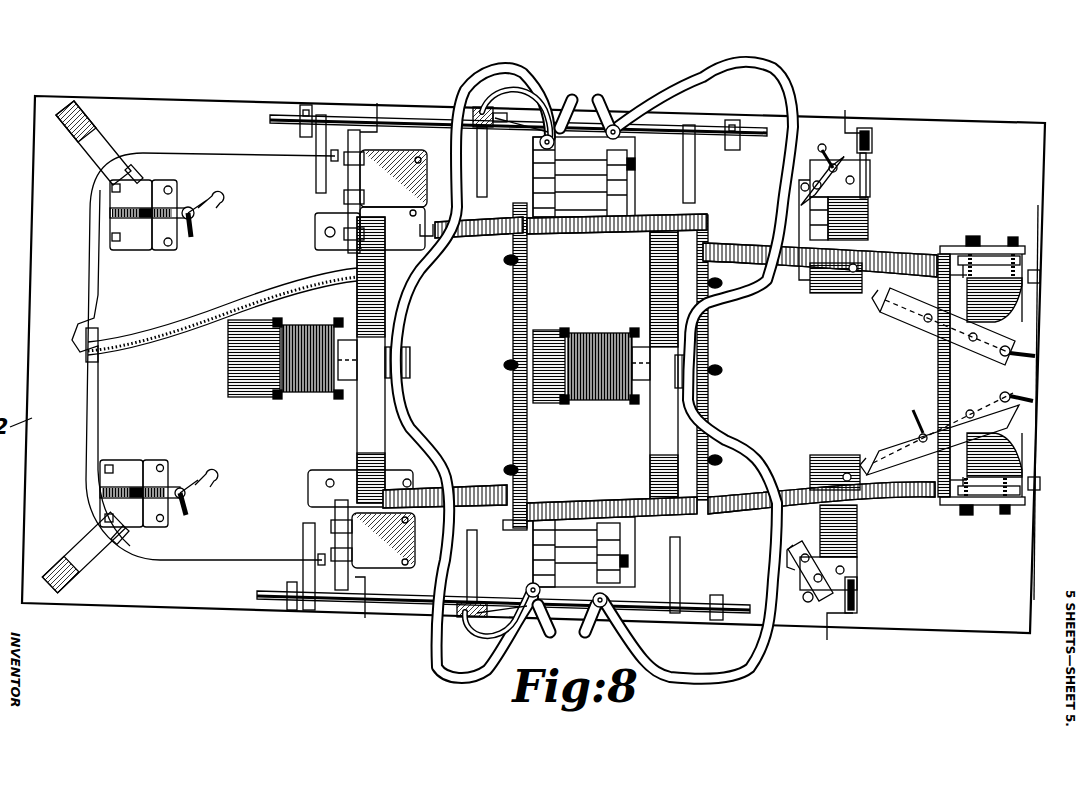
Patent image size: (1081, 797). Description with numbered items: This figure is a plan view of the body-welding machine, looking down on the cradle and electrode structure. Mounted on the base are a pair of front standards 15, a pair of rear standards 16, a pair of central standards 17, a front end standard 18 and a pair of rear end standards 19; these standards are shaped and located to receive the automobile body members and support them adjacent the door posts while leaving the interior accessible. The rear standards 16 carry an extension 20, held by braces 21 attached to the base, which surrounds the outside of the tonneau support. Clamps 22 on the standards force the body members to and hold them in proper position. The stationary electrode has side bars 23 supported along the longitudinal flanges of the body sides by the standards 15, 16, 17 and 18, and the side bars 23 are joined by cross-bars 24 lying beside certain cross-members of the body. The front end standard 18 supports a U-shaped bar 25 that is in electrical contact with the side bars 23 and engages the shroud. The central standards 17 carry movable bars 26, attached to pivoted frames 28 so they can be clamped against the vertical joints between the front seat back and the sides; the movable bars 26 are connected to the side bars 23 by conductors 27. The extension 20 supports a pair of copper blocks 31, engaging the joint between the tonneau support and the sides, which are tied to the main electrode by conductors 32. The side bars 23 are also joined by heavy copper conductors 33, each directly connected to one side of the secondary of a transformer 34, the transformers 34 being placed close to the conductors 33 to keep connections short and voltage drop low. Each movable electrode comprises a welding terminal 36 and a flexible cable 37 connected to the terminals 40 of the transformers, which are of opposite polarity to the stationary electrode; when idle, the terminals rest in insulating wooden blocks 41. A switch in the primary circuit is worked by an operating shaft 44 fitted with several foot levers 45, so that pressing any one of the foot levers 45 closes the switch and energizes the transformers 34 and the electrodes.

The front standards 15 is at (855, 223).
The rear standards 16 is at (420, 178).
The central standards 17 is at (618, 172).
The front end standard 18 is at (1008, 298).
The rear end standards 19 is at (145, 215).
The extension 20 is at (87, 468).
The braces 21 is at (100, 152).
The clamps 22 is at (215, 197).
The side bars 23 is at (483, 222).
The cross-bars 24 is at (528, 305).
The U-shaped bar 25 is at (935, 363).
The movable bars 26 is at (477, 120).
The conductors 27 is at (513, 107).
The frames 28 is at (500, 117).
The copper blocks 31 is at (140, 173).
The conductors 32 is at (100, 292).
The heavy copper conductors 33 is at (385, 278).
The transformers 34 is at (313, 383).
The welding terminal 36 is at (610, 130).
The flexible cable 37 is at (490, 70).
The terminals 40 is at (410, 358).
The wooden blocks 41 is at (577, 117).
The operating shaft 44 is at (400, 120).
The foot levers 45 is at (318, 170).